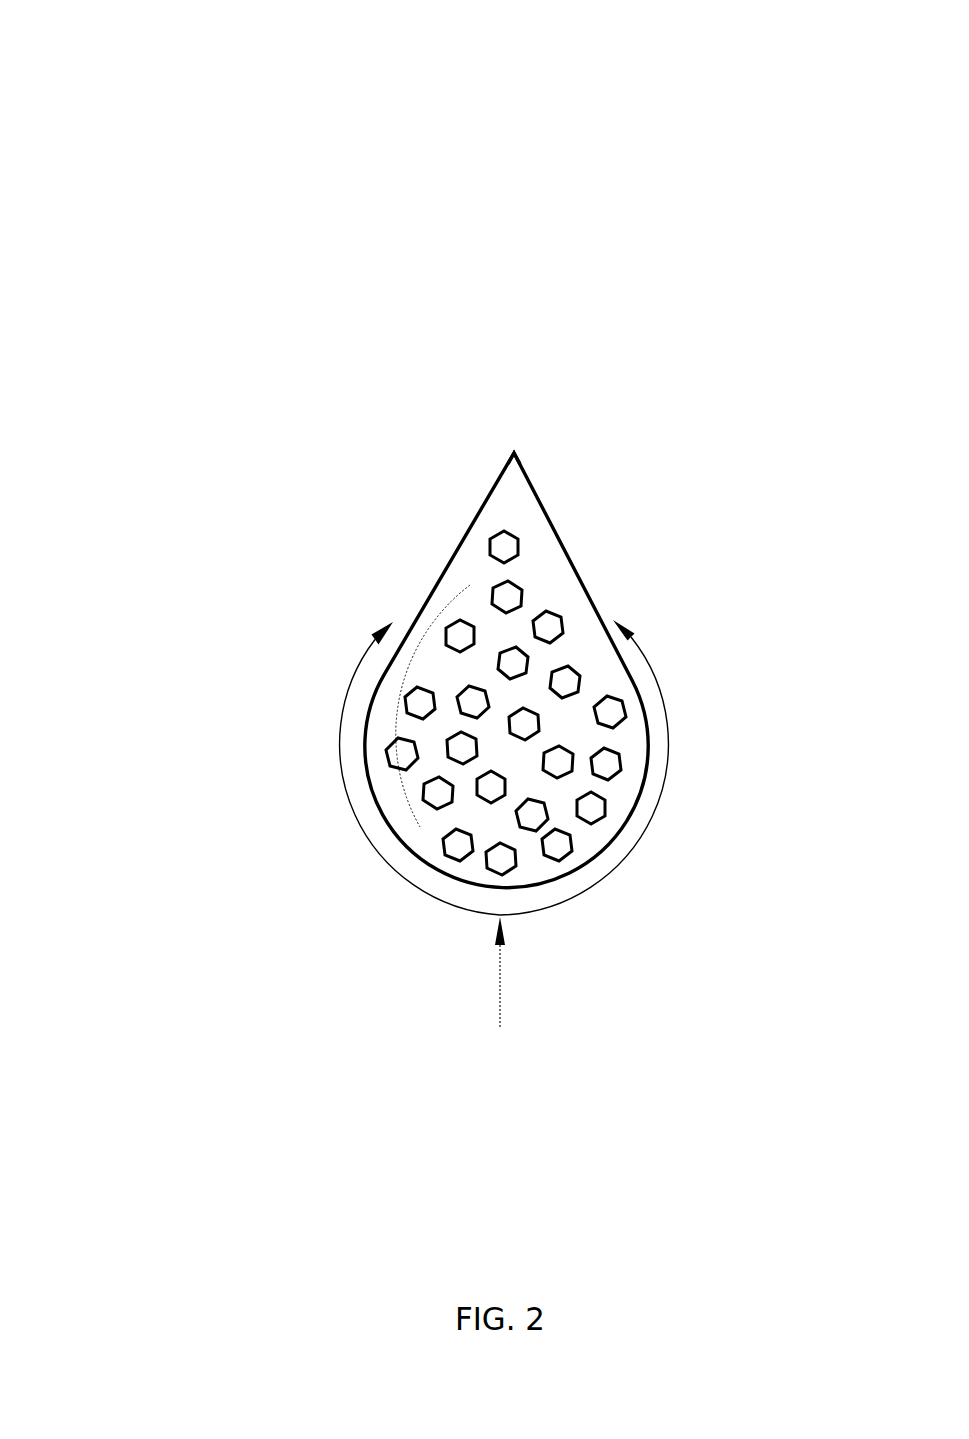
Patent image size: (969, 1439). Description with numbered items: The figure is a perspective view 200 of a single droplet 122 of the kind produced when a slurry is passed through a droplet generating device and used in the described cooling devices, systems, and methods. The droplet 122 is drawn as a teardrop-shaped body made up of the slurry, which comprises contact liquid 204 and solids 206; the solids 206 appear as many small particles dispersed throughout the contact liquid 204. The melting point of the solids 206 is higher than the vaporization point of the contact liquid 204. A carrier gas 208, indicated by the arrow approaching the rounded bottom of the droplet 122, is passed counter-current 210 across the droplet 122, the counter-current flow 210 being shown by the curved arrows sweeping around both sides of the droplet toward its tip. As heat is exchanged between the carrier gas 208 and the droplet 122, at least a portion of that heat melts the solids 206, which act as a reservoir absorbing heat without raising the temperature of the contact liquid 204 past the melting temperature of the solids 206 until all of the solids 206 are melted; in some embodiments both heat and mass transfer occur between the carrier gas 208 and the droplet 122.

The perspective view 200 is at (158, 74).
The droplet 122 is at (513, 453).
The contact liquid 204 is at (523, 508).
The solids 206 is at (497, 547).
The carrier gas 208 is at (501, 989).
The counter-current flow 210 is at (645, 830).